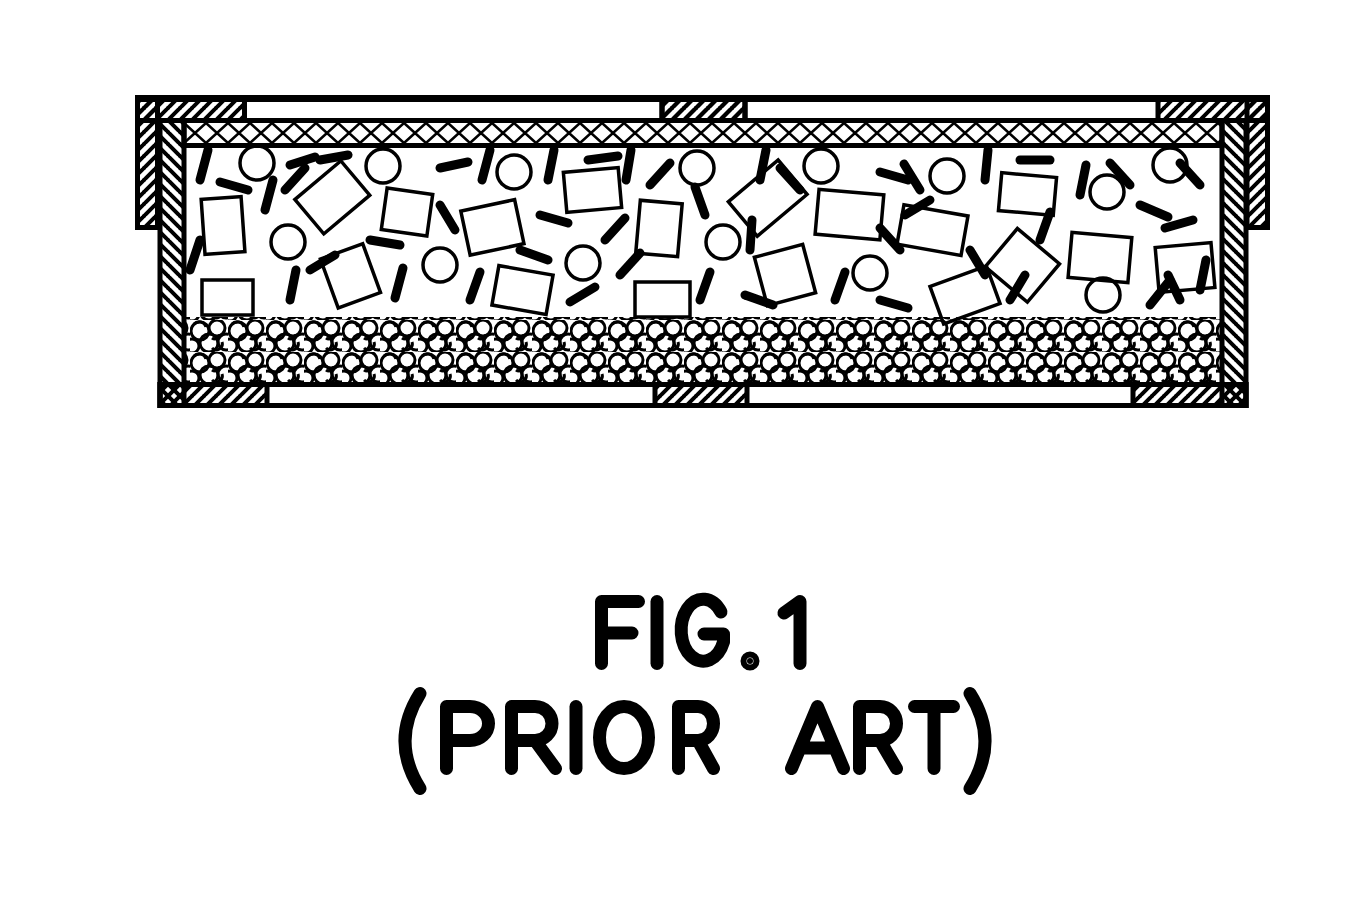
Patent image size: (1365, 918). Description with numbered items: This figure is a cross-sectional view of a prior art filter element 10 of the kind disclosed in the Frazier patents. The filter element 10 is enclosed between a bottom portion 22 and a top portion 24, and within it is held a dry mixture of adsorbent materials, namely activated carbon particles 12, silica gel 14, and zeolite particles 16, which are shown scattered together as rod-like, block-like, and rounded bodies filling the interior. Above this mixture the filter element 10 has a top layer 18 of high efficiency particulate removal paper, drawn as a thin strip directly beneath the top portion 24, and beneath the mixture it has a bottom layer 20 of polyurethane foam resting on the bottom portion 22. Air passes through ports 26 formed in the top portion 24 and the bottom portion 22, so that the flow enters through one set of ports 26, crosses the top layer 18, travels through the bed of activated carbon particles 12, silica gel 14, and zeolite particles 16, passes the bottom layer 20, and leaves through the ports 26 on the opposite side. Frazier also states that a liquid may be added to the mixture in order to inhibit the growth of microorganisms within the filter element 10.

The filter element 10 is at (316, 425).
The activated carbon particles 12 is at (452, 164).
The silica gel 14 is at (847, 207).
The zeolite particles 16 is at (258, 163).
The top layer 18 is at (988, 125).
The bottom layer 20 is at (1247, 316).
The bottom portion 22 is at (1000, 405).
The top portion 24 is at (1203, 97).
The ports 26 is at (710, 102).